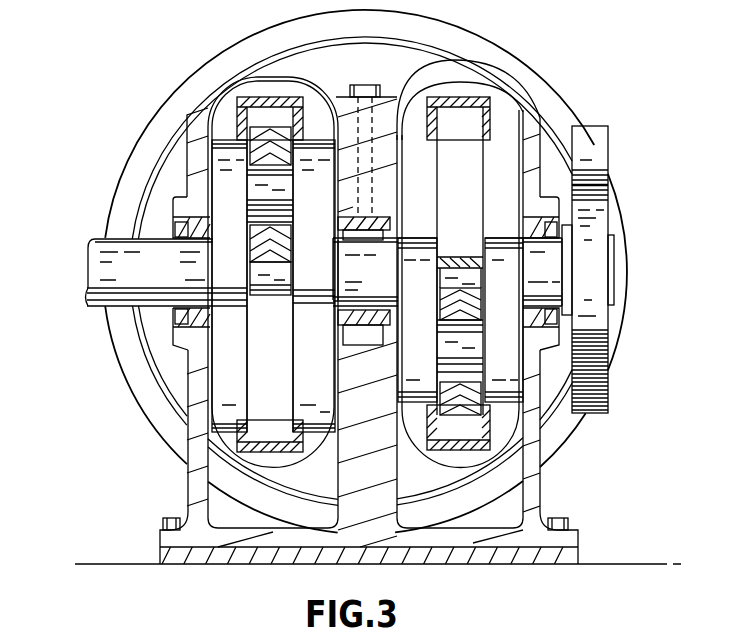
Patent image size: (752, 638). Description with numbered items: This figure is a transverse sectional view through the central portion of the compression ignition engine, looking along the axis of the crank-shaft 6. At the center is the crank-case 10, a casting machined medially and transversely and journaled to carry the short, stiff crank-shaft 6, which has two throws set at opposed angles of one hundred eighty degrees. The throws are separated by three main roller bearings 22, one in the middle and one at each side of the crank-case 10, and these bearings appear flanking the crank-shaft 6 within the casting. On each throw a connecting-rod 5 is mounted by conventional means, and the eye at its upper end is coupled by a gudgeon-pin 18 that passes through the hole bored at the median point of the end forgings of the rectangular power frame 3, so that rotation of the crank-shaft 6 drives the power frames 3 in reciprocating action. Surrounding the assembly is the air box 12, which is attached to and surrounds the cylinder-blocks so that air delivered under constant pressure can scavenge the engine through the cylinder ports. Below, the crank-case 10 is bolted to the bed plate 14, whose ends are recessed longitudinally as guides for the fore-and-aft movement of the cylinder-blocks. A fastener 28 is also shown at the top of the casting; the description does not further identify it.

The power frame 3 is at (492, 180).
The connecting-rod 5 is at (279, 293).
The crank-shaft 6 is at (87, 274).
The crank-case 10 is at (541, 108).
The air box 12 is at (544, 86).
The bed plate 14 is at (577, 550).
The gudgeon-pin 18 is at (296, 271).
The main roller bearings 22 is at (168, 228).
The bolt 28 is at (379, 66).